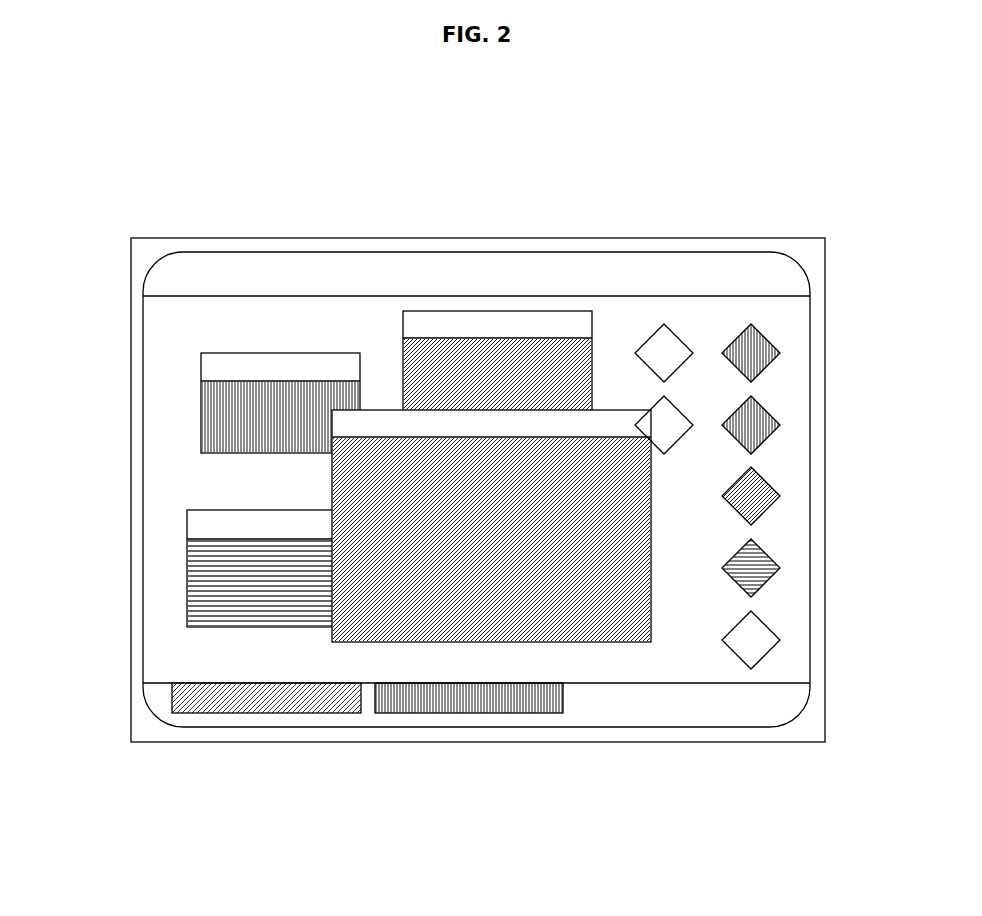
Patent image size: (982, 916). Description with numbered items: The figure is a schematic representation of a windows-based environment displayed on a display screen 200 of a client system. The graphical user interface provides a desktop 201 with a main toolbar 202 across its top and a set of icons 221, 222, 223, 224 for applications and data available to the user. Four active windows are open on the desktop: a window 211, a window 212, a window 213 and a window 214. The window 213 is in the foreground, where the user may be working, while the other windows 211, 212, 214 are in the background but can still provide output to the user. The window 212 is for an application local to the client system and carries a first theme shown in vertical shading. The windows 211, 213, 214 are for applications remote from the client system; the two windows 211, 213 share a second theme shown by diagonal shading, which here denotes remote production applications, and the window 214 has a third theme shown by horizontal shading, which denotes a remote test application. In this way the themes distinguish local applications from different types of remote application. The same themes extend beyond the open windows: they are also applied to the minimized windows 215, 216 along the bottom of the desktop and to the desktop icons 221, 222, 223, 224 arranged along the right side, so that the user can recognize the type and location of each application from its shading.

The display screen 200 is at (160, 238).
The desktop 201 is at (158, 323).
The main toolbar 202 is at (375, 267).
The window 211 is at (403, 323).
The window 212 is at (201, 397).
The window 213 is at (332, 483).
The window 214 is at (187, 570).
The minimized window 215 is at (302, 713).
The minimized window 216 is at (518, 713).
The icon 221 is at (766, 353).
The icon 222 is at (778, 427).
The icon 223 is at (777, 494).
The icon 224 is at (767, 583).